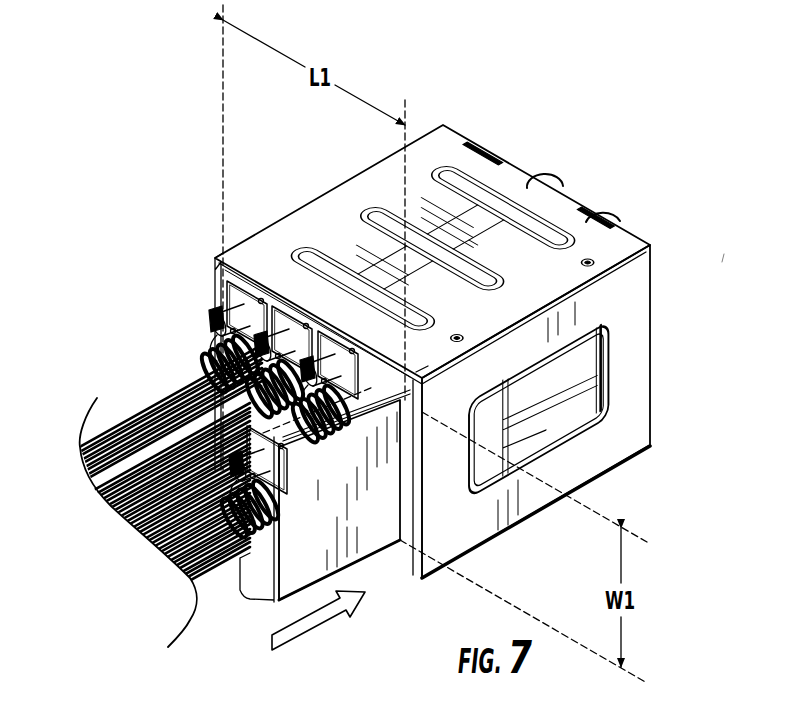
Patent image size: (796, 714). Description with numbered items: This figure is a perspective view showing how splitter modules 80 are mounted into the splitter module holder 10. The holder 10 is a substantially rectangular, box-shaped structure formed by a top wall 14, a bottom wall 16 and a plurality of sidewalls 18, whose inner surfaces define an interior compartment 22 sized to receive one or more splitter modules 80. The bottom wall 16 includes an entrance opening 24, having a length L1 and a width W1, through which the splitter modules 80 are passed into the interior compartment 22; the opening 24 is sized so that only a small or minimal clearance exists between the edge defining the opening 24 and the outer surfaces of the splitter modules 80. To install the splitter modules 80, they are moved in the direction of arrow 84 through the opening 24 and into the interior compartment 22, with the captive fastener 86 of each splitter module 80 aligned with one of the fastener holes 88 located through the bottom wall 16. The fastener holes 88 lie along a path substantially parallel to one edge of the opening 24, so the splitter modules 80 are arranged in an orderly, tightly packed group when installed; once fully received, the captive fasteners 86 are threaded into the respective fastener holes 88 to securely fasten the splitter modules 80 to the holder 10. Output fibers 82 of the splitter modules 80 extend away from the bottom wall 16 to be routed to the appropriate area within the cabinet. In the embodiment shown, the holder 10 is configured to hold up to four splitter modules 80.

The splitter module holder 10 is at (724, 258).
The top wall 14 is at (636, 226).
The bottom wall 16 is at (412, 505).
The sidewalls 18 is at (597, 240).
The interior compartment 22 is at (582, 418).
The entrance opening 24 is at (403, 556).
The splitter modules 80 is at (262, 600).
The output fibers 82 is at (190, 565).
The arrow 84 is at (313, 637).
The captive fastener 86 is at (217, 372).
The fastener holes 88 is at (380, 372).